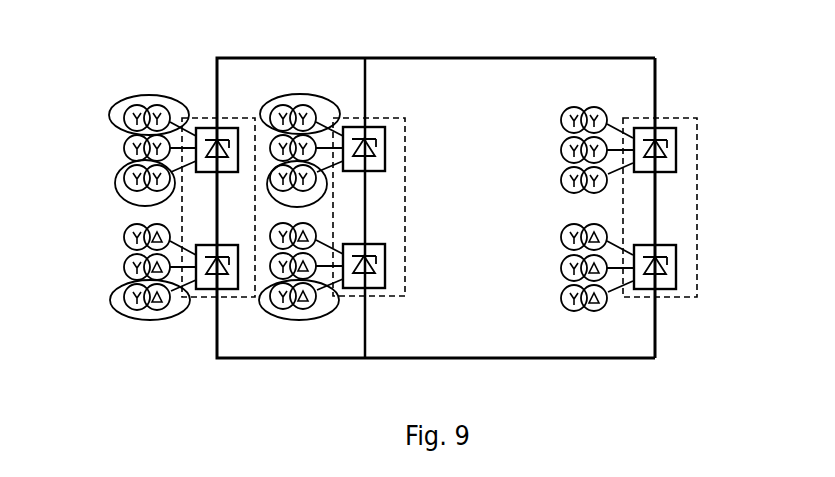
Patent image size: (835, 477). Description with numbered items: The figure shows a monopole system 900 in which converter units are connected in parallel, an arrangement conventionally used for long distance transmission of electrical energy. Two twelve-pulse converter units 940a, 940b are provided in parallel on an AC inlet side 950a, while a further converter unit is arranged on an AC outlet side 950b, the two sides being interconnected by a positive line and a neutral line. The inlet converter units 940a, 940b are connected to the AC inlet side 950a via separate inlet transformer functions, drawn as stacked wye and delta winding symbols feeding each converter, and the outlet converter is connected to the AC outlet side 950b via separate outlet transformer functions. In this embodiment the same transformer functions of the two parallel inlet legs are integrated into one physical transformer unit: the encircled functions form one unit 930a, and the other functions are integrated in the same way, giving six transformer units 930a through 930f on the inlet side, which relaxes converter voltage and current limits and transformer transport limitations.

The monopole system 900 is at (182, 58).
The transformer unit 930a is at (340, 271).
The transformer unit 930f is at (68, 282).
The 12-pulse converter unit 940a is at (232, 118).
The 12-pulse converter unit 940b is at (382, 118).
The AC inlet side 950a is at (436, 232).
The AC outlet side 950b is at (632, 231).